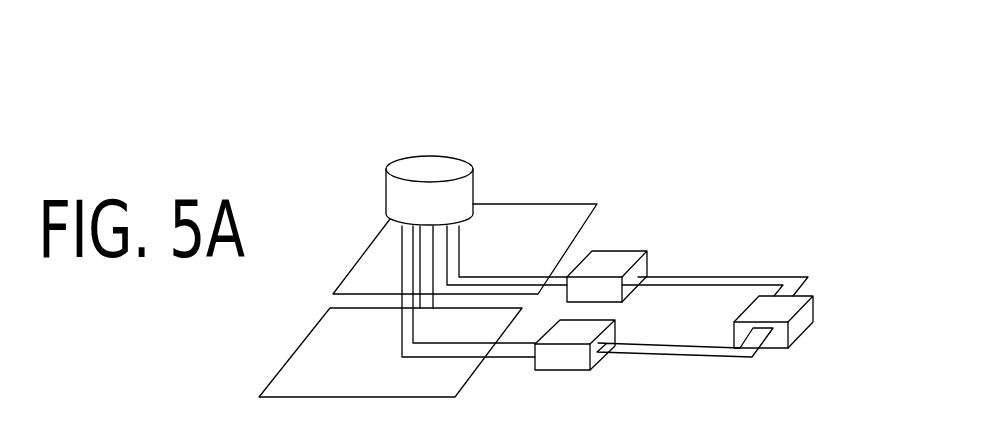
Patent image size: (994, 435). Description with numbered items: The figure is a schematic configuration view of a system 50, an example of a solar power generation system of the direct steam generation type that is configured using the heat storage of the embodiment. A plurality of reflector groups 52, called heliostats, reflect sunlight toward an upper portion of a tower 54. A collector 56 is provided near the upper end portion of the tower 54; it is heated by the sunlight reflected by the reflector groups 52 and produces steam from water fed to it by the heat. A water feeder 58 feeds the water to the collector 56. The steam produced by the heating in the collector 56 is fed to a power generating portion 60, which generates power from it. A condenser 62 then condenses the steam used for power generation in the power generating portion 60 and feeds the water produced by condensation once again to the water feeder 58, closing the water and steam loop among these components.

The system 50 is at (567, 85).
The reflector groups 52 is at (308, 372).
The tower 54 is at (403, 142).
The collector 56 is at (422, 156).
The water feeder 58 is at (568, 360).
The power generating portion 60 is at (607, 260).
The condenser 62 is at (794, 307).